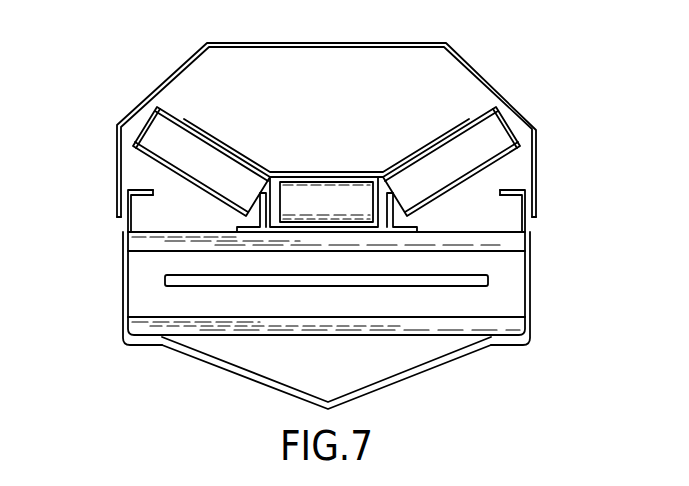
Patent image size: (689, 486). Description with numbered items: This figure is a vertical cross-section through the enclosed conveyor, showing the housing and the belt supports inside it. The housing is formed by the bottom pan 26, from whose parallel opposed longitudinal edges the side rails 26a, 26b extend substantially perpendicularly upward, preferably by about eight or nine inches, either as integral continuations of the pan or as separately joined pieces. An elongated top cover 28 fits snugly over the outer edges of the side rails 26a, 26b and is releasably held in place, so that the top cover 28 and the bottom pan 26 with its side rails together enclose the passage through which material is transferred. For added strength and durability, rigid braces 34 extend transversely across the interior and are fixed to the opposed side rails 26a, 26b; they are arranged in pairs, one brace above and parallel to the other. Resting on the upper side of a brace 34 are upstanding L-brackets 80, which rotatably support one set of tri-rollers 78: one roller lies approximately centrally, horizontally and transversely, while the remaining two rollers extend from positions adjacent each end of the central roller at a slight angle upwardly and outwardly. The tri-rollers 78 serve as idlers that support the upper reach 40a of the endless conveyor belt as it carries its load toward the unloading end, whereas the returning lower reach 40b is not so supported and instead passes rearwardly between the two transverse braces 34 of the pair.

The top cover 28 is at (427, 43).
The bottom pan 26 is at (237, 372).
The side rail 26a is at (122, 265).
The side rail 26b is at (527, 277).
The rigid brace 34 is at (509, 250).
The upper reach 40a is at (442, 140).
The lower reach 40b is at (484, 280).
The tri-rollers 78 is at (186, 148).
The L-bracket 80 is at (400, 226).